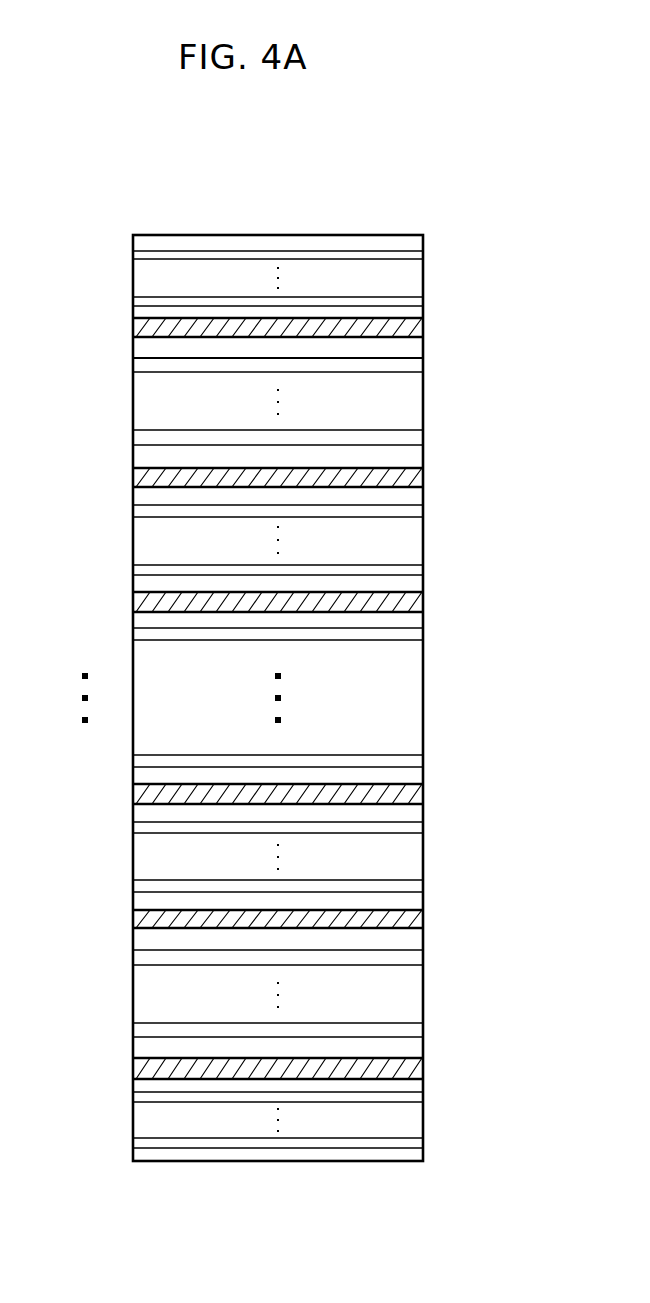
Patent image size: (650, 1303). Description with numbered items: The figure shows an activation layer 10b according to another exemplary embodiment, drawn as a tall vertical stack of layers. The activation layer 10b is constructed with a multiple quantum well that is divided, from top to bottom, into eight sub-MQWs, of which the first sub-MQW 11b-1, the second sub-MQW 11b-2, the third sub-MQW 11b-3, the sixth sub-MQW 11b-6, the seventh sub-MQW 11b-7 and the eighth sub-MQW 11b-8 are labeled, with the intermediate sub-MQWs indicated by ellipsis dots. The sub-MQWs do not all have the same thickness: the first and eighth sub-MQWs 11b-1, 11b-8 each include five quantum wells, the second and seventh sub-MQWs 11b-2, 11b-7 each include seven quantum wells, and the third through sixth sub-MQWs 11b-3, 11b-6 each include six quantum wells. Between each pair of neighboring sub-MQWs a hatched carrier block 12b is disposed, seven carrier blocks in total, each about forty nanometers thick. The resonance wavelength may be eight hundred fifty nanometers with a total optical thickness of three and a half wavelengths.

The activation layer 10b is at (418, 201).
The first sub-MQW 11b-1 is at (128, 235).
The second sub-MQW 11b-2 is at (128, 343).
The third sub-MQW 11b-3 is at (128, 489).
The sixth sub-MQW 11b-6 is at (128, 805).
The seventh sub-MQW 11b-7 is at (128, 935).
The eighth sub-MQW 11b-8 is at (128, 1080).
The carrier block 12b is at (413, 331).